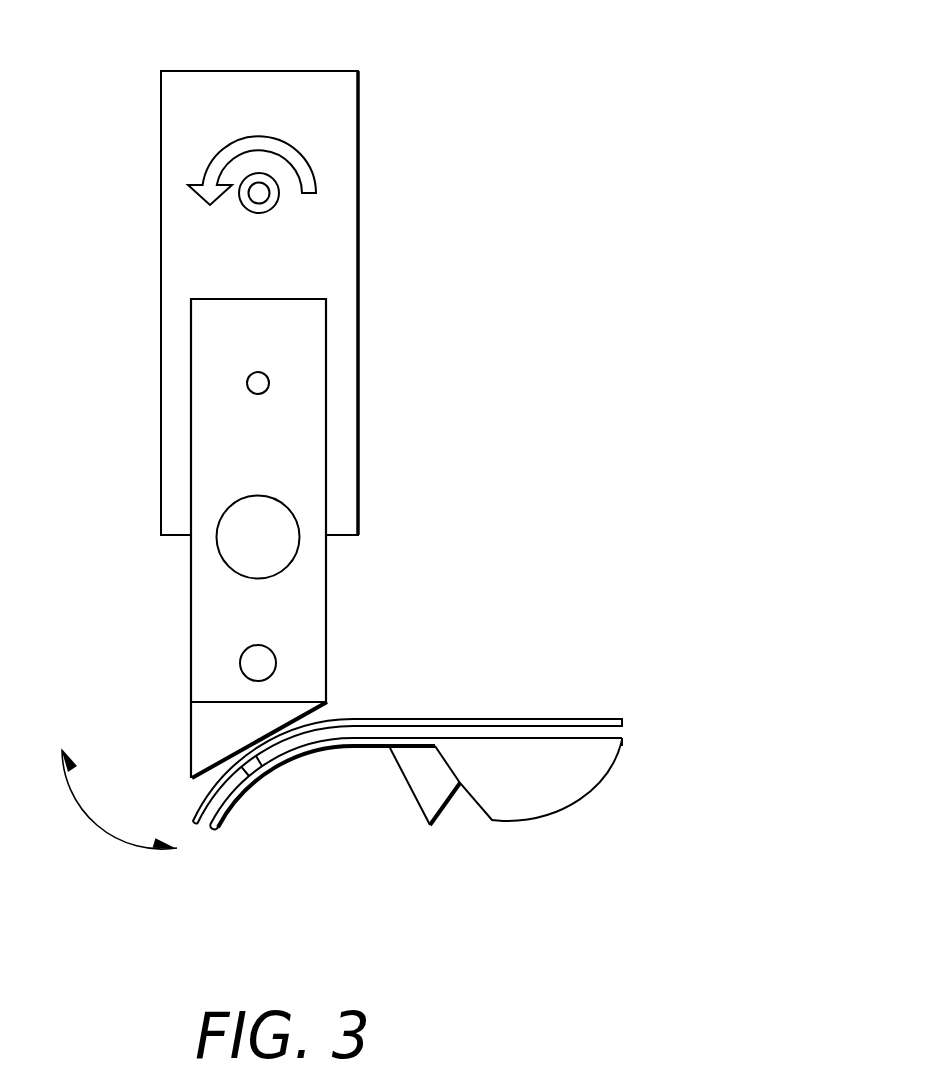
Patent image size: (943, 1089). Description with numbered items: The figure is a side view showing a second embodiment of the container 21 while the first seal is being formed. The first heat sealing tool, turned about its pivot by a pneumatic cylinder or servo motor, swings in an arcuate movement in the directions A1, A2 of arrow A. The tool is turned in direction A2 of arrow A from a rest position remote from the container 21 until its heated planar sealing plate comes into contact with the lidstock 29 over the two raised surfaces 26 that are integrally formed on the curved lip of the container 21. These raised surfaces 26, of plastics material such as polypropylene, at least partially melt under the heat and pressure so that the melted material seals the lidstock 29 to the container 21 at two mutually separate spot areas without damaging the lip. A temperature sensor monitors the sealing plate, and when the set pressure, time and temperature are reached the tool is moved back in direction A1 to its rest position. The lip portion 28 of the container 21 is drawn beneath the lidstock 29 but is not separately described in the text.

The tape assembly 21 is at (515, 787).
The block 26 is at (253, 766).
The folded piece 28 is at (593, 758).
The top strip 29 is at (427, 721).
The pivot angle A is at (119, 798).
The first angular position A1 is at (55, 729).
The second angular position A2 is at (195, 852).